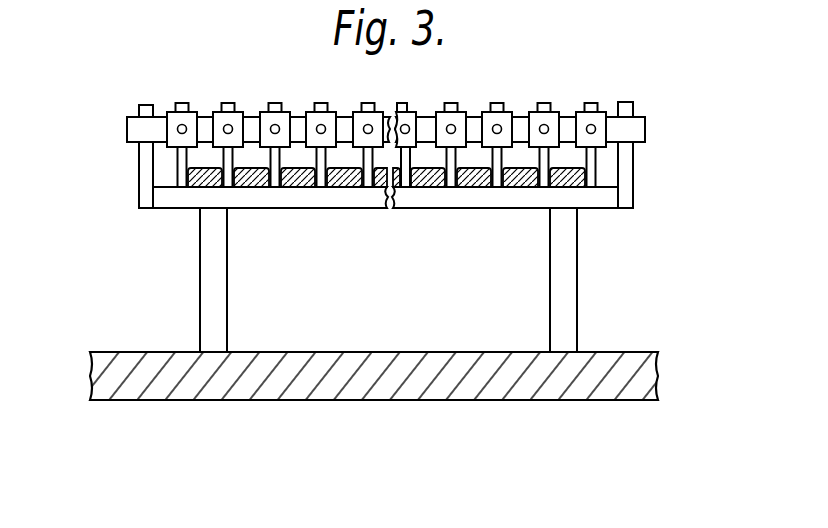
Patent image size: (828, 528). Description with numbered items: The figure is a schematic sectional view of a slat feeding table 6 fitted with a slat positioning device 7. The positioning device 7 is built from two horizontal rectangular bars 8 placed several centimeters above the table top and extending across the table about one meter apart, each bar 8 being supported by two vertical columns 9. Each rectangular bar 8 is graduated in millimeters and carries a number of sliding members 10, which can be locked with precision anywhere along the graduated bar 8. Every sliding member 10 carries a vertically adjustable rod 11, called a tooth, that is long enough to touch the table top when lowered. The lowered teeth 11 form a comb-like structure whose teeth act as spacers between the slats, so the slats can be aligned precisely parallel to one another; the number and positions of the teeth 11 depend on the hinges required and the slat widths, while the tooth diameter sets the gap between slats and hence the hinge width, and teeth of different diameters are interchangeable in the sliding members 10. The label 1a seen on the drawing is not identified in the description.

The slat feeding table 6 is at (182, 240).
The slat positioning device 7 is at (614, 83).
The horizontal rectangular bar 8 is at (137, 128).
The vertical column 9 is at (143, 165).
The sliding member 10 is at (270, 120).
The vertically adjustable rod (tooth) 11 is at (396, 185).
The workpiece 1a is at (300, 187).